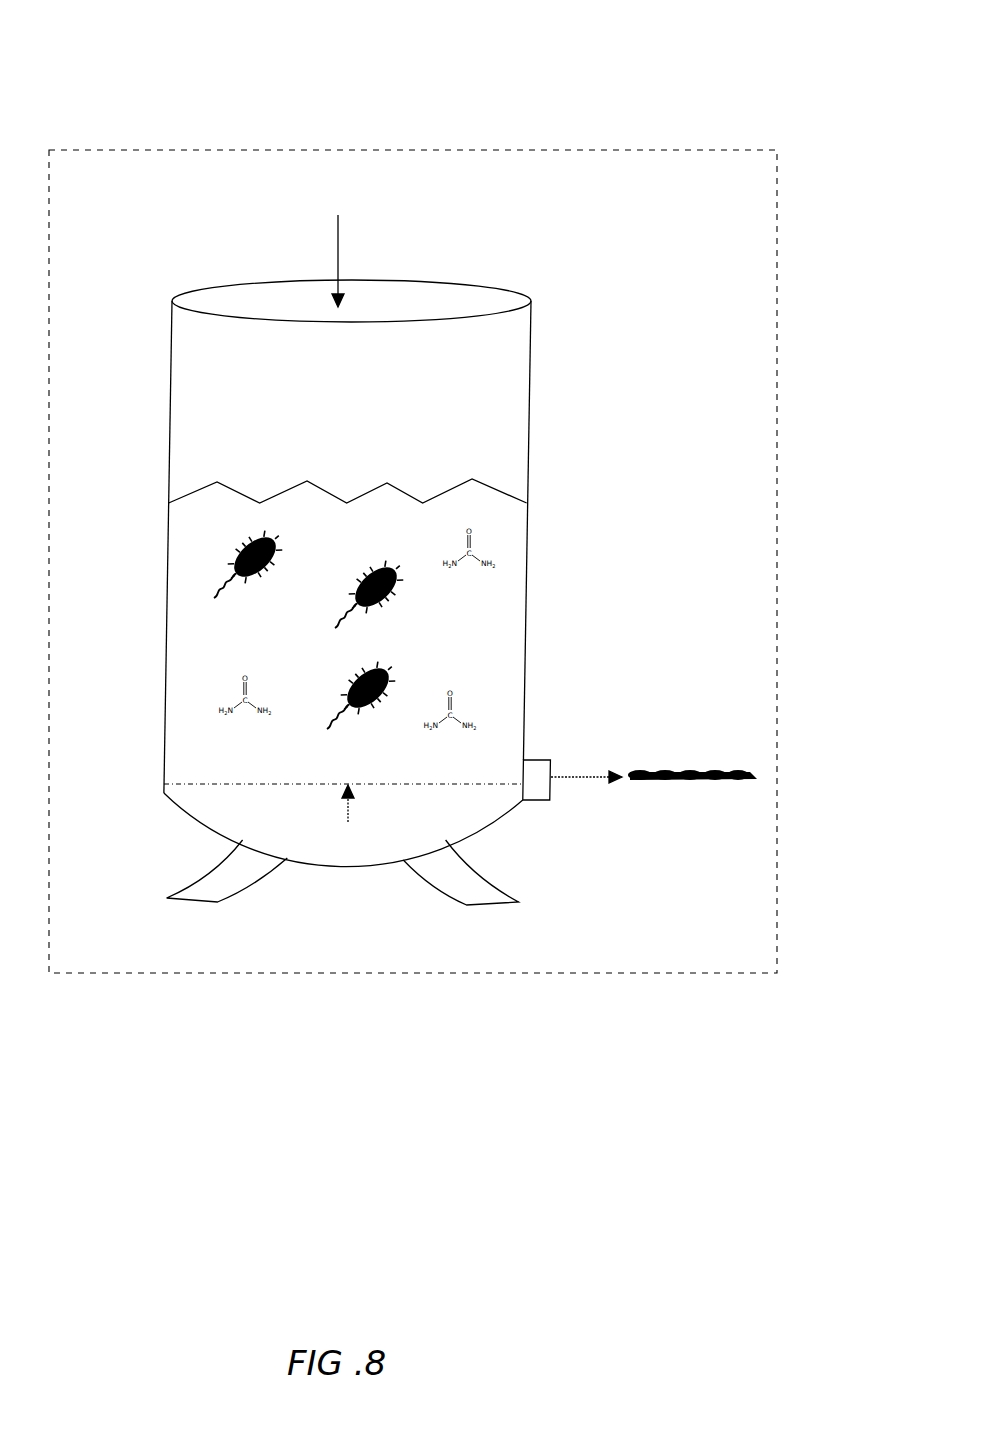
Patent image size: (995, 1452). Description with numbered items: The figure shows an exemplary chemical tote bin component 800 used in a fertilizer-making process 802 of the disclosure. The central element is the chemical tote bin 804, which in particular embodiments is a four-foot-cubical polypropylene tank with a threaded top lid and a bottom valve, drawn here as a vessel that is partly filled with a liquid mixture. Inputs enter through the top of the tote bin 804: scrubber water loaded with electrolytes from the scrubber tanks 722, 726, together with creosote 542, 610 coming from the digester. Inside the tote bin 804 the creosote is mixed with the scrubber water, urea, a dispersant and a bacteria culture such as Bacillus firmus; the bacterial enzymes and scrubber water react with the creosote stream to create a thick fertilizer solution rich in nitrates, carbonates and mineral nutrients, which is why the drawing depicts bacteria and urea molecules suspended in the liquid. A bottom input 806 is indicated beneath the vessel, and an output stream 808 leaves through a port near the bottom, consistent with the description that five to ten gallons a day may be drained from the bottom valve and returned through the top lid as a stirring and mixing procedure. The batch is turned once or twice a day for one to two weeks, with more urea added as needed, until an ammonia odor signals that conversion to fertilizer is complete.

The bioreactor system 800 is at (806, 56).
The process 802 is at (556, 139).
The scrubber tank 722 is at (201, 199).
The scrubber tank 726 is at (279, 199).
The creosote 542 is at (393, 199).
The creosote 610 is at (464, 199).
The chemical tote bin 804 is at (364, 405).
The heat/mixing input 806 is at (368, 855).
The output product 808 is at (696, 833).